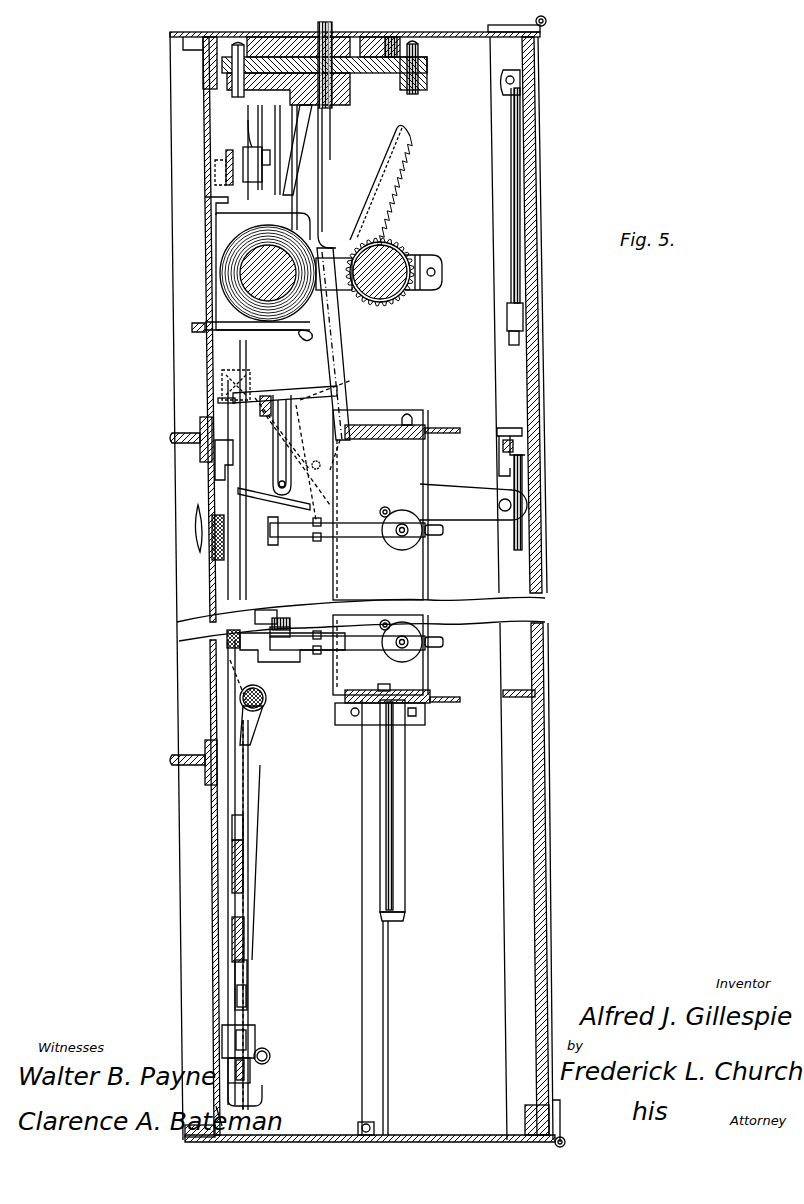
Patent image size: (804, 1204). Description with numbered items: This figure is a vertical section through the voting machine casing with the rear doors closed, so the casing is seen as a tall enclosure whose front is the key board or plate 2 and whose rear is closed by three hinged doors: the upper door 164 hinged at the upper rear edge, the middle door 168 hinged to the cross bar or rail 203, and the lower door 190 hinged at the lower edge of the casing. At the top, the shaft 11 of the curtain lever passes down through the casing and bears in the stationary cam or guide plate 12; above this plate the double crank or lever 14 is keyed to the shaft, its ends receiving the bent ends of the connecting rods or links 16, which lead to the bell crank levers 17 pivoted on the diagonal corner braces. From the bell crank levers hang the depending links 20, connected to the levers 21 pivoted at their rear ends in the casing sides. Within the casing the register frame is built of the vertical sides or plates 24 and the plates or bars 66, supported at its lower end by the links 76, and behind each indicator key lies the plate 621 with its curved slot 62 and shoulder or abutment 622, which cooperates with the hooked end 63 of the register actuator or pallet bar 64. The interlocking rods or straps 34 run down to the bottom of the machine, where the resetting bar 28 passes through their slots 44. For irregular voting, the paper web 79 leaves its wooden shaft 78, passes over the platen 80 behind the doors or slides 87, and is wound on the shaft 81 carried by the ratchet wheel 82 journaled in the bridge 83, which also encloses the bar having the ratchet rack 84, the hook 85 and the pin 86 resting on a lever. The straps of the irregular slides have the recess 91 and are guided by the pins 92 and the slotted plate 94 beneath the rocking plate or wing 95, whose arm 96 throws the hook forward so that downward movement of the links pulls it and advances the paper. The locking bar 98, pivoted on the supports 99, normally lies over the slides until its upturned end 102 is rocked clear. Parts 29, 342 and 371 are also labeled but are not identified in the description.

The key board or plate 2 is at (207, 583).
The shaft 11 is at (350, 95).
The stationary cam or guide plate 12 is at (390, 78).
The double crank or lever 14 is at (428, 63).
The connecting rods or links 16 is at (246, 52).
The bell crank levers 17 is at (265, 135).
The depending links 20 is at (275, 420).
The levers 21 is at (473, 502).
The vertical sides or plates 24 is at (396, 505).
The resetting bar 28 is at (245, 968).
The bracket 29 is at (203, 55).
The rods or straps 34 is at (237, 672).
The slots 44 is at (248, 994).
The curved slot 62 is at (286, 621).
The hooked end 63 is at (276, 544).
The register actuator or pallet bar 64 is at (355, 640).
The plates or bars 66 is at (425, 700).
The links 76 is at (372, 1010).
The wooden shaft 78 is at (270, 272).
The paper web 79 is at (344, 320).
The platen 80 is at (250, 287).
The shaft 81 is at (382, 284).
The ratchet wheel 82 is at (395, 246).
The bridge 83 is at (422, 290).
The ratchet rack 84 is at (386, 192).
The hook 85 is at (312, 507).
The pin 86 is at (320, 464).
The doors or slides 87 is at (205, 200).
The recess 91 is at (222, 462).
The pins 92 is at (218, 400).
The plate 94 is at (244, 496).
The pivoted or rocking plate or wing 95 is at (240, 372).
The arm 96 is at (322, 396).
The bar 98 is at (230, 172).
The supports 99 is at (225, 155).
The upturned end 102 is at (250, 150).
The upper door 164 is at (537, 293).
The middle door 168 is at (538, 541).
The lower door 190 is at (540, 940).
The cross bar or rail 203 is at (538, 692).
The block 342 is at (250, 1072).
The bracket 371 is at (255, 1030).
The plate 621 is at (227, 638).
The shoulder or abutment 622 is at (275, 599).